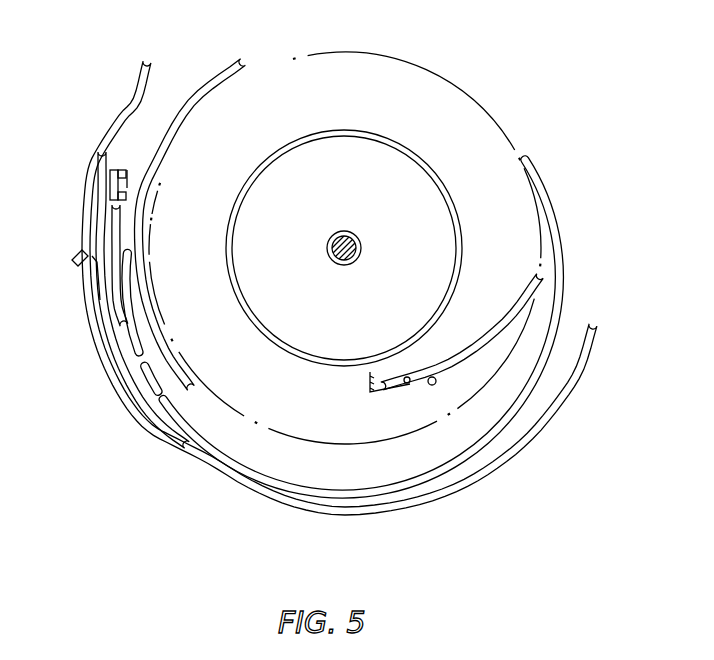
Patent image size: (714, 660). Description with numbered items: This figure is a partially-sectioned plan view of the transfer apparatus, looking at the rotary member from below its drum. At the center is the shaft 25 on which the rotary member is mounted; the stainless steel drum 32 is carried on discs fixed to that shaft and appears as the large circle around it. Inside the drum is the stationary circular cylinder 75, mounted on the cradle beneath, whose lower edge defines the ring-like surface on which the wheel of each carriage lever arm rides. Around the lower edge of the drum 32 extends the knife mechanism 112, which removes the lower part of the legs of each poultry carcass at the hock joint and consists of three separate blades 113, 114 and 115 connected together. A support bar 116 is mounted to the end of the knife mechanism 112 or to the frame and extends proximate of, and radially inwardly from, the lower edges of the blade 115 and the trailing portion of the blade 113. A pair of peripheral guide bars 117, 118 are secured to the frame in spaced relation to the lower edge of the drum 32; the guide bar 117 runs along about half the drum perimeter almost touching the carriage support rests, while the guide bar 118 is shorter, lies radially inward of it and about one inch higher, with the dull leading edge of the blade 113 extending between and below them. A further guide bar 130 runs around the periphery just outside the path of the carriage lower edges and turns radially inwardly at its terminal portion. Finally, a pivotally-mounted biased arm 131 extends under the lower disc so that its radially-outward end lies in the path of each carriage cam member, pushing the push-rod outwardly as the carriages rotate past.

The shaft 25 is at (358, 242).
The stainless steel drum 32 is at (397, 56).
The stationary circular cylinder 75 is at (463, 223).
The knife mechanism 112 is at (128, 450).
The blade 113 is at (102, 210).
The blade 114 is at (132, 167).
The blade 115 is at (147, 378).
The support bar 116 is at (135, 323).
The guide bar 117 is at (203, 473).
The guide bar 118 is at (213, 80).
The guide bar 130 is at (77, 265).
The pivotally-mounted biased arm 131 is at (505, 323).